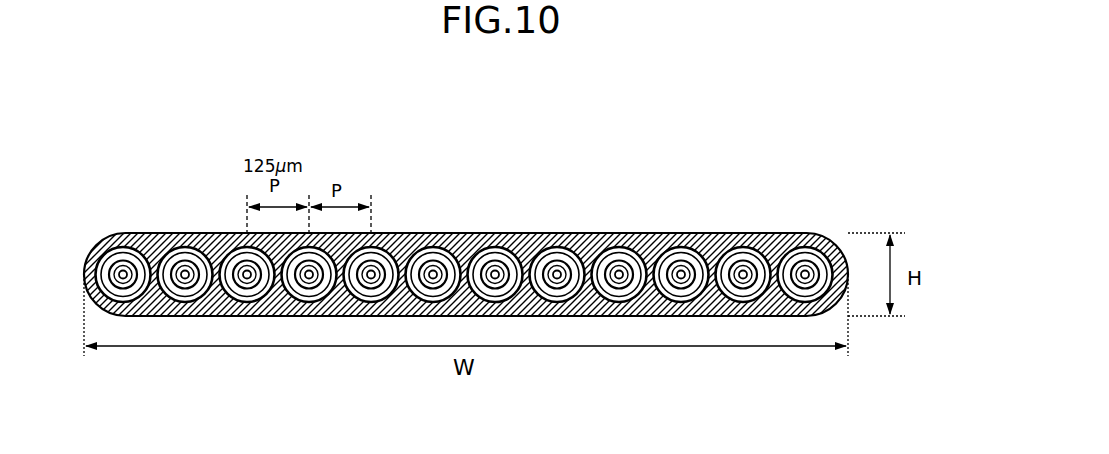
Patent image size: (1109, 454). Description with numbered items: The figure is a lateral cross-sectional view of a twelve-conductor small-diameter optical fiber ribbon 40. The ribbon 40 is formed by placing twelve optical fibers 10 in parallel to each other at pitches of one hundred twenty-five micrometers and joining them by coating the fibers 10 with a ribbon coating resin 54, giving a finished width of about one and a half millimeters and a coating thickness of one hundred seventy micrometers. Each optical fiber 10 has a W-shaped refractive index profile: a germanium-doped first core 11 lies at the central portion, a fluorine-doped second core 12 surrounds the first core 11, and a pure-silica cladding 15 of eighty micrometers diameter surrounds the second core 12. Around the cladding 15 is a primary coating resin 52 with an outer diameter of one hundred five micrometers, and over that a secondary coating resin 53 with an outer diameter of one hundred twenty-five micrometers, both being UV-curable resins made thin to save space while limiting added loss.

The optical fiber ribbon 40 is at (557, 130).
The optical fiber 10 is at (443, 232).
The first core 11 is at (679, 280).
The second core 12 is at (686, 283).
The cladding 15 is at (689, 252).
The primary coating resin 52 is at (675, 252).
The secondary coating resin 53 is at (663, 246).
The ribbon coating resin 54 is at (780, 232).